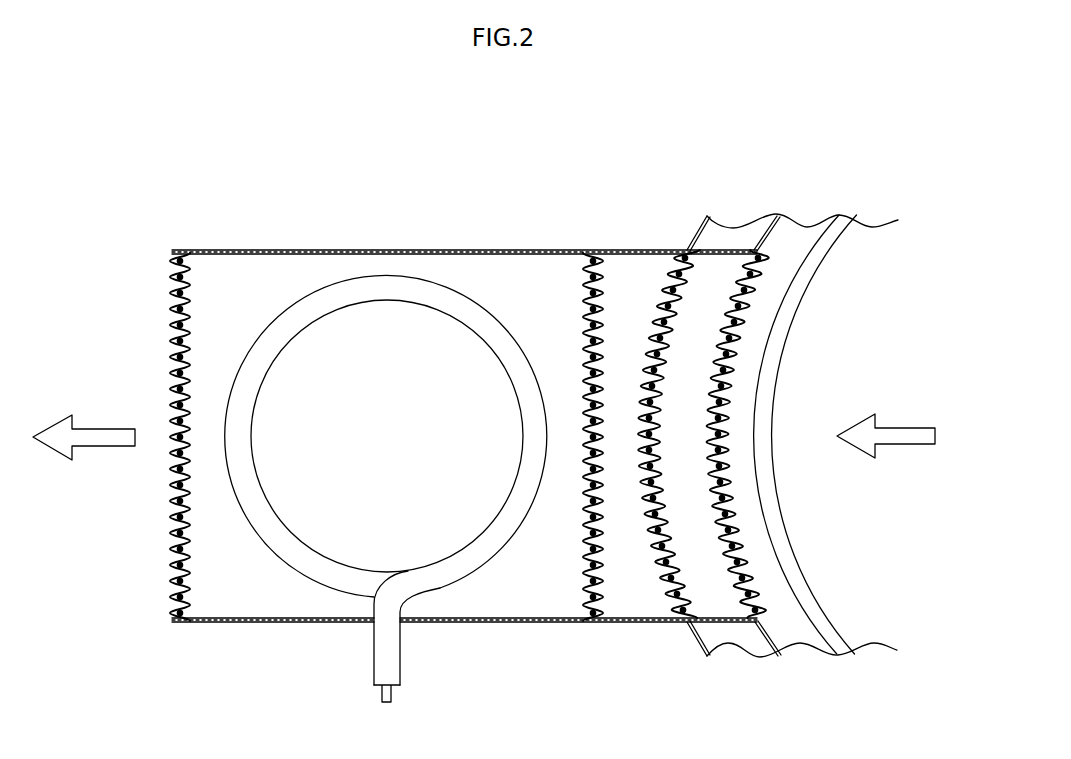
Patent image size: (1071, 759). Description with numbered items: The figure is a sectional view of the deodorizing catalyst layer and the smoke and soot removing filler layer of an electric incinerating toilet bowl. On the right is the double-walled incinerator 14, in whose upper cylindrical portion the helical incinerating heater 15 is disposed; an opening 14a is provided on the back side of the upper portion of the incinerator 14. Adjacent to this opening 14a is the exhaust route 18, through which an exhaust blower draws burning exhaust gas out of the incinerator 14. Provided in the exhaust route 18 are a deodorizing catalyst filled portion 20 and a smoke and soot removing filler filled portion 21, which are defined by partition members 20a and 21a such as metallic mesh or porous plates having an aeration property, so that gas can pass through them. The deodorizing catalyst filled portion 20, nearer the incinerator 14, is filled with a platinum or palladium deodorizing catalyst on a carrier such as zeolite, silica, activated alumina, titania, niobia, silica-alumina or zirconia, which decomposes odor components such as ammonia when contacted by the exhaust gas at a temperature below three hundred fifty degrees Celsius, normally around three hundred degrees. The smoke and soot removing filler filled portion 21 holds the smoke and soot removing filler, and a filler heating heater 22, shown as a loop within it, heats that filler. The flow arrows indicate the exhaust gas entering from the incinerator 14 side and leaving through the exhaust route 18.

The incinerator 14 is at (740, 664).
The opening 14a is at (758, 614).
The helical incinerating heater 15 is at (774, 357).
The exhaust route 18 is at (561, 632).
The deodorizing catalyst filled portion 20 is at (664, 266).
The partition member 20a is at (672, 594).
The smoke and soot removing filler filled portion 21 is at (160, 286).
The partition member 21a is at (598, 288).
The filler heating heater 22 is at (394, 283).